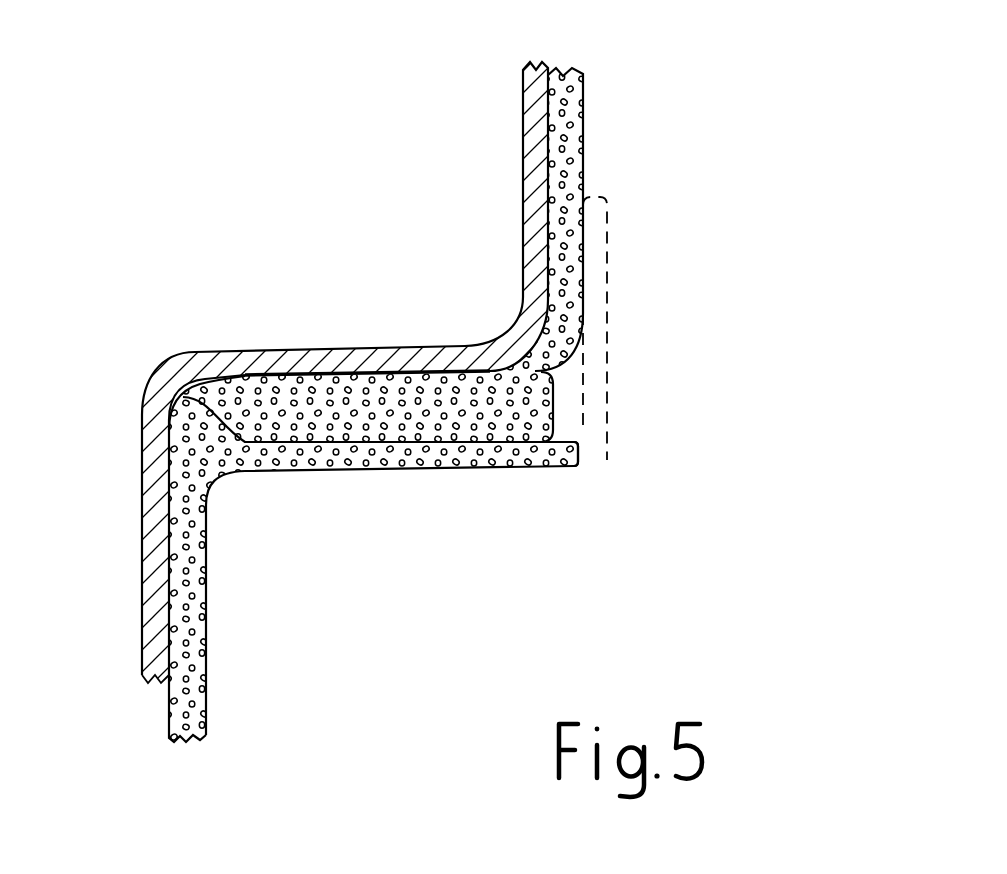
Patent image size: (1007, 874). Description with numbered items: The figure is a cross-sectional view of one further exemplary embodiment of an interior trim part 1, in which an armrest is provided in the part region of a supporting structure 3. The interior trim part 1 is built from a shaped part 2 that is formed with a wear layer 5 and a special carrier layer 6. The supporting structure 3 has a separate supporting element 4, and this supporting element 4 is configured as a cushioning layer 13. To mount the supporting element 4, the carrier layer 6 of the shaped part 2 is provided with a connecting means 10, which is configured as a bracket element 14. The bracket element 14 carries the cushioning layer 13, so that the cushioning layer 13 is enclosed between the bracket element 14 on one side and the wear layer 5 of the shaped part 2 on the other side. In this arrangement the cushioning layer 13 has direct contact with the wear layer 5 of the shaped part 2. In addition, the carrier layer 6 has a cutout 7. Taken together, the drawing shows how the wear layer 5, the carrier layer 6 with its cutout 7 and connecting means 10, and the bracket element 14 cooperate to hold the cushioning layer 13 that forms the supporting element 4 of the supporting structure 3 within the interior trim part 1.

The interior trim part 1 is at (340, 132).
The shaped part 2 is at (122, 329).
The supporting structure 3 is at (352, 553).
The supporting element 4 is at (578, 400).
The wear layer 5 is at (308, 348).
The carrier layer 6 is at (565, 116).
The cutout 7 is at (256, 374).
The connecting means 10 is at (566, 477).
The cushioning layer 13 is at (407, 407).
The bracket element 14 is at (447, 456).